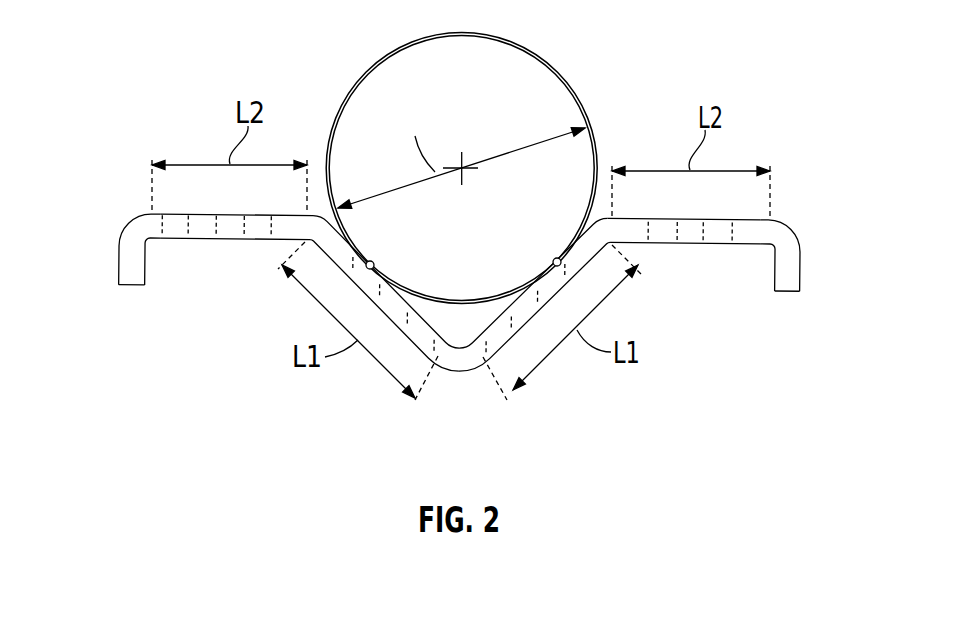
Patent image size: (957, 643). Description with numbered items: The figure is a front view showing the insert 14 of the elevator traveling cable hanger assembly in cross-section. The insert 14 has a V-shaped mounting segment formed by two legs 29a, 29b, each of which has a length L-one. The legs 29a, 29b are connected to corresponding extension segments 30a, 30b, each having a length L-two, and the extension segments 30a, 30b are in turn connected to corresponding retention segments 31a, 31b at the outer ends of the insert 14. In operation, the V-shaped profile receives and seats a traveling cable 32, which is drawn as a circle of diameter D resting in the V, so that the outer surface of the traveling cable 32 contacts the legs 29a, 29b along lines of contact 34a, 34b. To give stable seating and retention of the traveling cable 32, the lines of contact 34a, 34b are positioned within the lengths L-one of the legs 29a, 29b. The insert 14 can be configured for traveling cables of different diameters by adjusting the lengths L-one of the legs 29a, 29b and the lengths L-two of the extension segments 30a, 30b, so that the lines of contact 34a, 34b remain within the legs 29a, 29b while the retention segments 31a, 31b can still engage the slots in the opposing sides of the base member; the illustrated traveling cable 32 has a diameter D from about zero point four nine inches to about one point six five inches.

The insert 14 is at (458, 336).
The leg 29a is at (423, 356).
The leg 29b is at (499, 356).
The extension segment 30a is at (205, 241).
The extension segment 30b is at (725, 244).
The retention segment 31a is at (118, 277).
The retention segment 31b is at (800, 271).
The traveling cable 32 is at (535, 53).
The line of contact 34a is at (374, 262).
The line of contact 34b is at (554, 260).